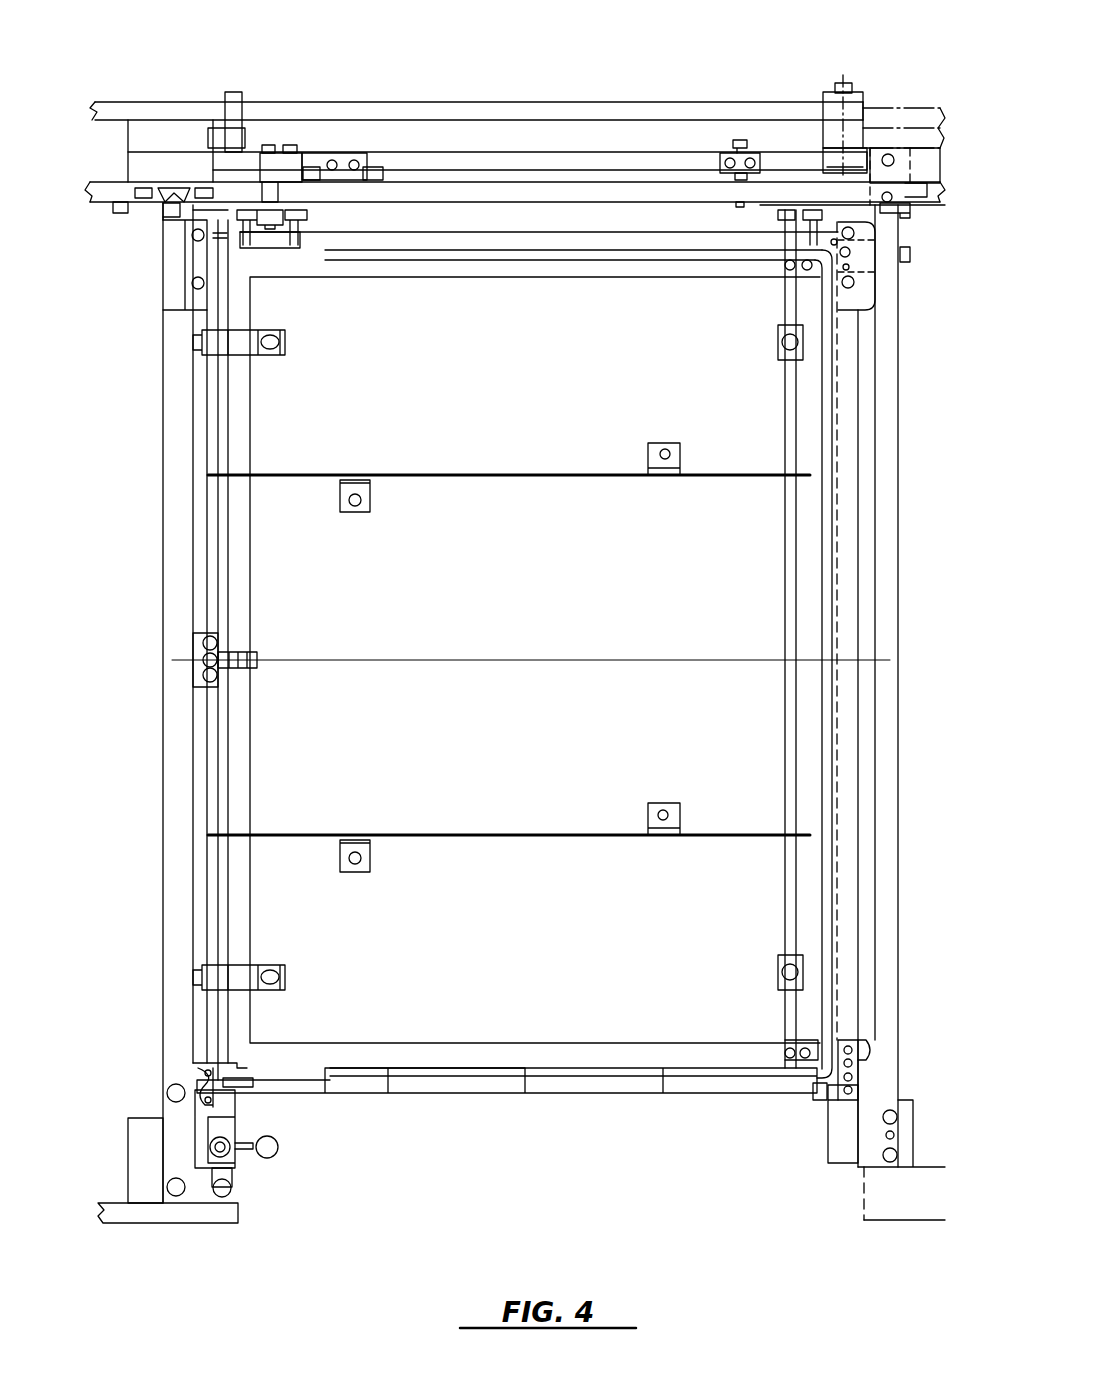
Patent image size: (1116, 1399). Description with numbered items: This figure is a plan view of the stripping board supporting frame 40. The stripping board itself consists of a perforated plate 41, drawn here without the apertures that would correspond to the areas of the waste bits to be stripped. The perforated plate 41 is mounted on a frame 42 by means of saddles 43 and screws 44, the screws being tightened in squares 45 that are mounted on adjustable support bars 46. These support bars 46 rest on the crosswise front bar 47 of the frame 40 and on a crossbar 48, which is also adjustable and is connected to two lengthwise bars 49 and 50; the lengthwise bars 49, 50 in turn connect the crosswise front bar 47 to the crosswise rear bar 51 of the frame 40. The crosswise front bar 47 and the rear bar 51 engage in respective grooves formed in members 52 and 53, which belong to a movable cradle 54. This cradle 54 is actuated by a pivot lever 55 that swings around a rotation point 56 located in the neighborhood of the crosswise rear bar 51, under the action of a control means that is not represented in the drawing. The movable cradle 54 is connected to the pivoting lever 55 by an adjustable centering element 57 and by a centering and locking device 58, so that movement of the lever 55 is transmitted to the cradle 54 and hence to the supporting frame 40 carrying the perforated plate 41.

The stripping board supporting frame 40 is at (424, 1100).
The perforated plate 41 is at (491, 990).
The frame 42 is at (358, 1112).
The saddles 43 is at (283, 323).
The screws 44 is at (353, 492).
The squares 45 is at (370, 497).
The adjustable support bars 46 is at (507, 480).
The crosswise front bar 47 is at (222, 735).
The crossbar 48 is at (797, 902).
The lengthwise bar 49 is at (285, 1068).
The lengthwise bar 50 is at (317, 240).
The crosswise rear bar 51 is at (825, 565).
The member 52 is at (178, 890).
The member 53 is at (855, 1012).
The movable cradle 54 is at (140, 402).
The pivot lever 55 is at (583, 168).
The rotation point 56 is at (837, 133).
The adjustable centering element 57 is at (372, 180).
The centering and locking device 58 is at (254, 1178).